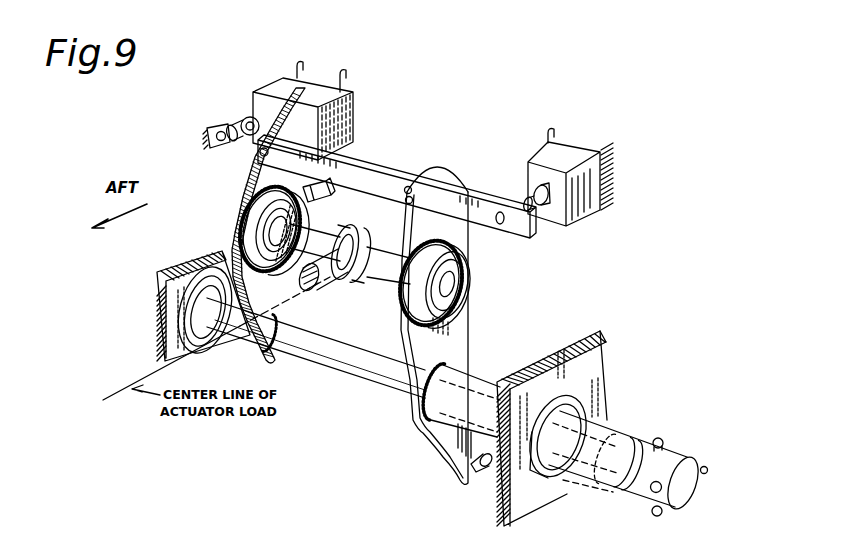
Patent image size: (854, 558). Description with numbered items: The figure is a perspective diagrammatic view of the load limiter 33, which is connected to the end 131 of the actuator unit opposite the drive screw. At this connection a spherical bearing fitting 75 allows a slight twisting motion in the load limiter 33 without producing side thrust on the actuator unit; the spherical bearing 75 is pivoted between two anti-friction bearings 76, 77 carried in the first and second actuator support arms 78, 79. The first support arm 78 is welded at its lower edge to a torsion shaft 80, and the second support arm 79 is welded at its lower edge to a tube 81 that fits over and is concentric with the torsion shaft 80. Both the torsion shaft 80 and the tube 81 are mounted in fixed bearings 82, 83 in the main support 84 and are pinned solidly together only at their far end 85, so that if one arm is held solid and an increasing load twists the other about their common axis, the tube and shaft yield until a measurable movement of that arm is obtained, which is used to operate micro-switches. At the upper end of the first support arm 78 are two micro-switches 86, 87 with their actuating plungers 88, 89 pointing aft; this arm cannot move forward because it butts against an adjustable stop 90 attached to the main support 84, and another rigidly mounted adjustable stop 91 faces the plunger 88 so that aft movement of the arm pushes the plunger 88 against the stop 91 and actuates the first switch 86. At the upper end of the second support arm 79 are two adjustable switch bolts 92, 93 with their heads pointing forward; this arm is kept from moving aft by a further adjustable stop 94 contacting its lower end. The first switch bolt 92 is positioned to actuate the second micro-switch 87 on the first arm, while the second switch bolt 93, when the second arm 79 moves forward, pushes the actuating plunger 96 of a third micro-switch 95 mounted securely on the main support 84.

The load limiter 33 is at (323, 464).
The spherical bearing fitting 75 is at (352, 280).
The anti-friction bearing 76 is at (236, 229).
The anti-friction bearing 77 is at (470, 265).
The first actuator support arm 78 is at (256, 181).
The second actuator support arm 79 is at (467, 338).
The torsion shaft 80 is at (327, 370).
The tube 81 is at (488, 382).
The fixed bearing 82 is at (212, 350).
The fixed bearing 83 is at (557, 482).
The main support 84 is at (158, 335).
The far end 85 is at (693, 462).
The first micro-switch 86 is at (272, 92).
The second micro-switch 87 is at (355, 115).
The actuating plunger 88 is at (255, 117).
The actuating plunger 89 is at (345, 143).
The adjustable stop 90 is at (328, 204).
The adjustable stop 91 is at (236, 126).
The first switch bolt 92 is at (300, 88).
The second switch bolt 93 is at (523, 200).
The adjustable stop 94 is at (480, 478).
The third micro-switch 95 is at (593, 147).
The actuating plunger 96 is at (543, 210).
The end of the actuator unit 131 is at (316, 283).